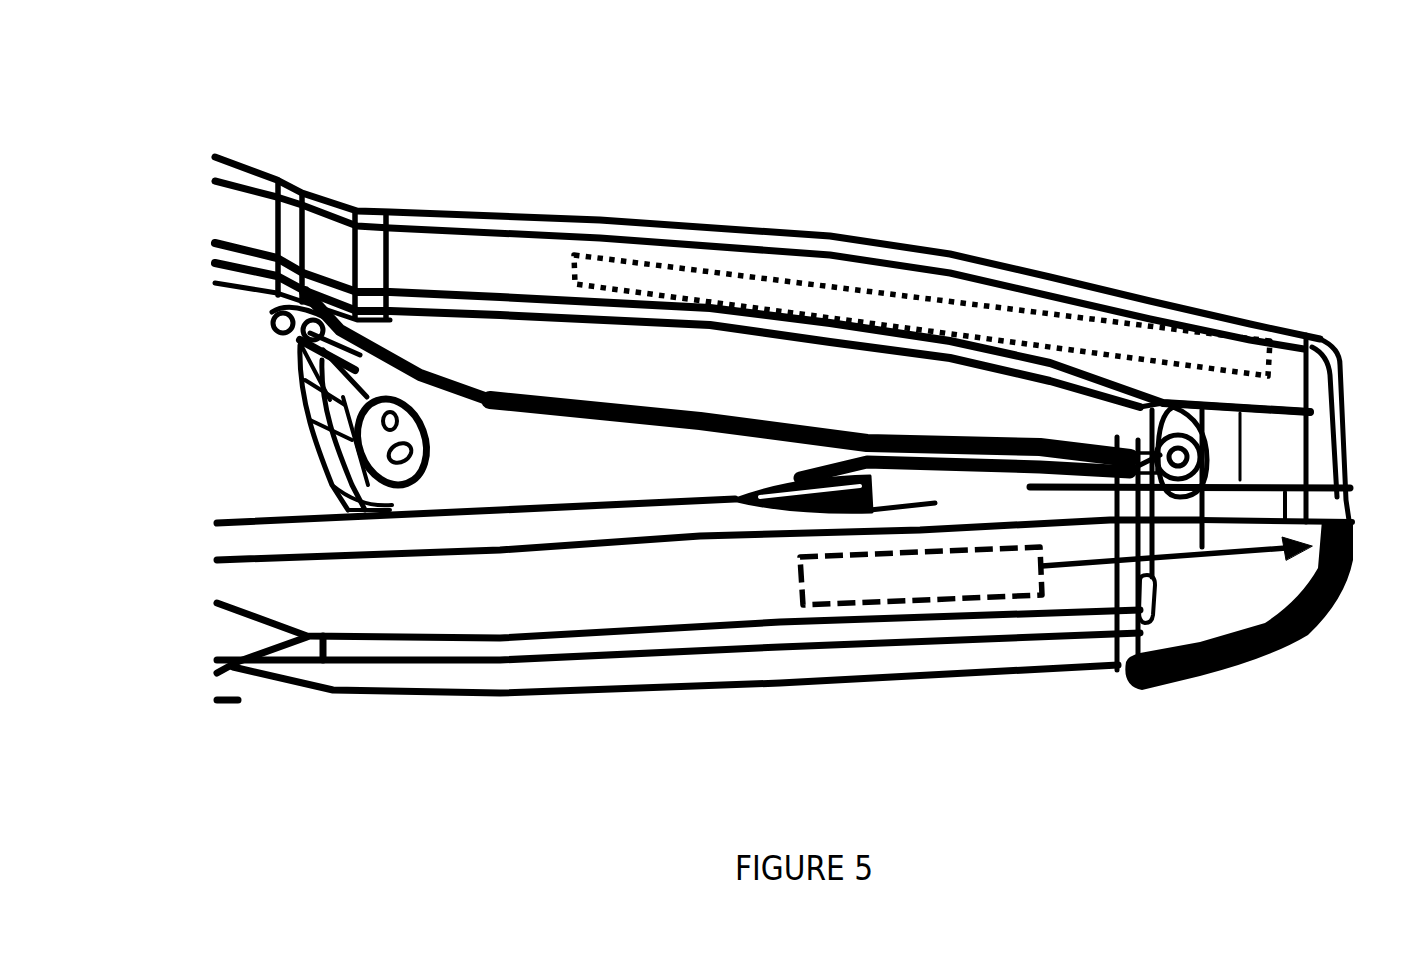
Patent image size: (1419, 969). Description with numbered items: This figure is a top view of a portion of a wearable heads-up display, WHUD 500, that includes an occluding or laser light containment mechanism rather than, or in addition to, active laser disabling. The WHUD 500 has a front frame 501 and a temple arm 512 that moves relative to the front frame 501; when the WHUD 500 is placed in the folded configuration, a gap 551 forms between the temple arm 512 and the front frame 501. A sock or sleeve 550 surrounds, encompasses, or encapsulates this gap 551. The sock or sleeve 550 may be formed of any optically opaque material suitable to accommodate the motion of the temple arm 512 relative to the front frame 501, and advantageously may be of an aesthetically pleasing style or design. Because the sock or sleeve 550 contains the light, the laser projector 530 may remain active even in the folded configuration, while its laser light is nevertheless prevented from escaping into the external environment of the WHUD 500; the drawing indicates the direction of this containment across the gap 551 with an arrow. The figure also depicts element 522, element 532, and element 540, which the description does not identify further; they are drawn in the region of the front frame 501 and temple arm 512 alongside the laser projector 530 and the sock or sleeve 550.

The wearable heads-up display 500 is at (1068, 101).
The front frame 501 is at (525, 257).
The temple arm 512 is at (760, 597).
The frame front / hinge portion 522 is at (1143, 333).
The laser projector 530 is at (953, 587).
The hinge 532 is at (1190, 557).
The electronics module 540 is at (748, 272).
The sock or sleeve 550 is at (1310, 632).
The gap 551 is at (1279, 602).